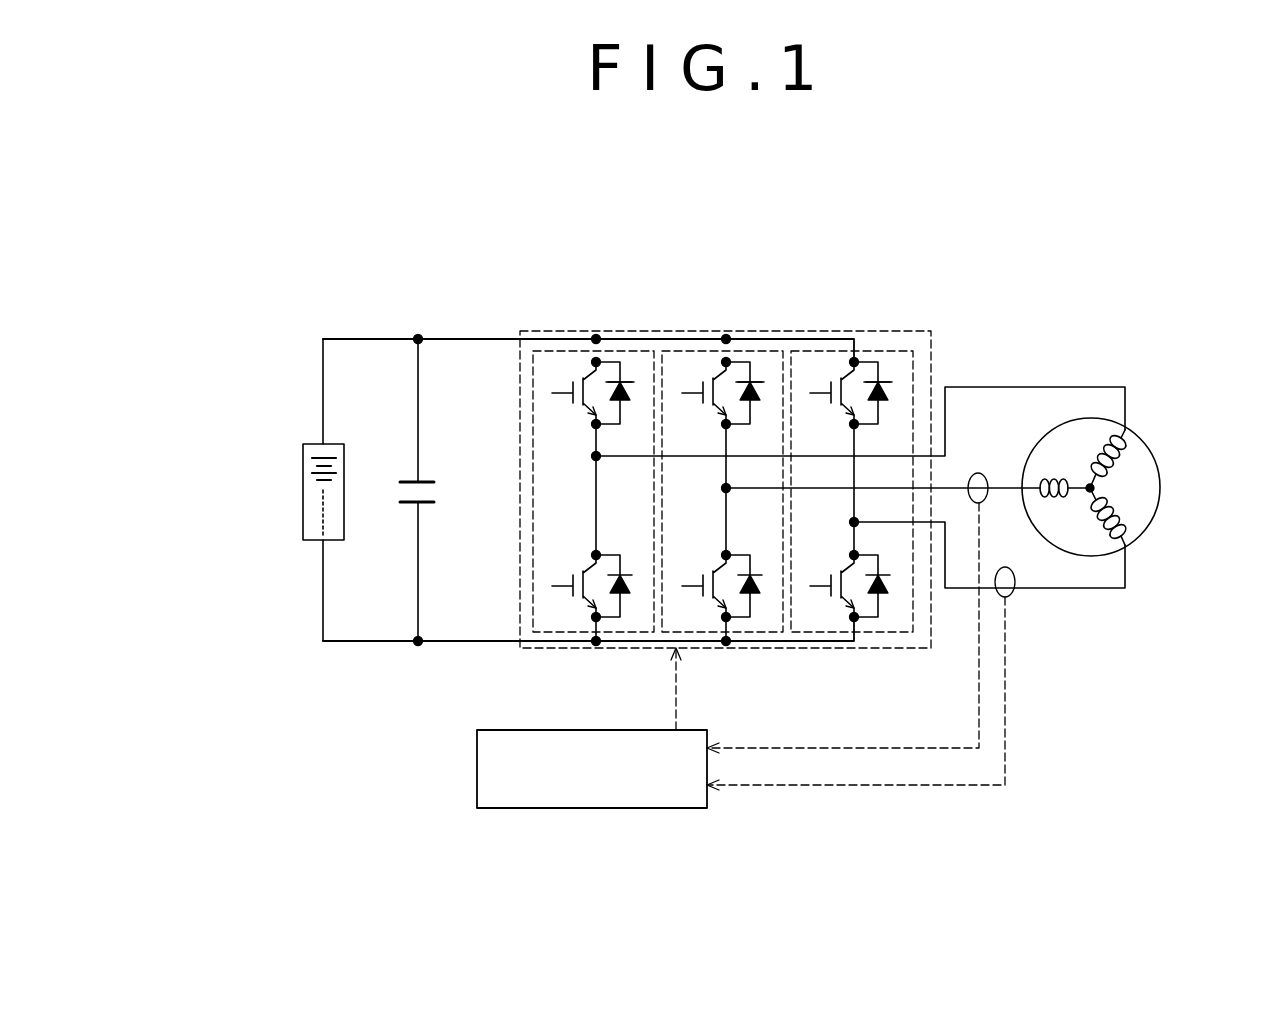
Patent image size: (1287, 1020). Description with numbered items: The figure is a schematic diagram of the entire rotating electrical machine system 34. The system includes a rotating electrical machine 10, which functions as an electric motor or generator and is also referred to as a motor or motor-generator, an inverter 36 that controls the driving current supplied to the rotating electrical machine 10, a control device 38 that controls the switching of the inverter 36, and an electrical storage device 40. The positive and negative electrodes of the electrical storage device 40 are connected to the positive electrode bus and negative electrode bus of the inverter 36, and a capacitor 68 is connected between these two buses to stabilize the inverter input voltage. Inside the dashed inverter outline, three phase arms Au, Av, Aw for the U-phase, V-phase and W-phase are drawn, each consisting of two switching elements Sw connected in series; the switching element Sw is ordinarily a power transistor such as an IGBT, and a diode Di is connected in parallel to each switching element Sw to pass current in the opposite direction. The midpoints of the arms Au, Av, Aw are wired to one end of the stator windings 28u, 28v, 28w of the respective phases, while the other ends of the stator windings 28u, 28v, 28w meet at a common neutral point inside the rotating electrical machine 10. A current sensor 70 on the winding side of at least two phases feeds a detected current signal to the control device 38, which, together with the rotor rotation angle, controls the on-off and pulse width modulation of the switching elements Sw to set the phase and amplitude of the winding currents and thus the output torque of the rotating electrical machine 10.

The rotating electrical machine 10 is at (1160, 497).
The U-phase stator winding 28u is at (1125, 442).
The V-phase stator winding 28v is at (1068, 483).
The W-phase stator winding 28w is at (1137, 541).
The rotating electrical machine system 34 is at (1058, 238).
The inverter 36 is at (598, 330).
The control device 38 is at (590, 810).
The electrical storage device 40 is at (303, 503).
The capacitor 68 is at (427, 506).
The current sensor 70 is at (978, 473).
The switching element Sw is at (584, 376).
The diode Di is at (621, 380).
The U-phase arm Au is at (596, 478).
The V-phase arm Av is at (726, 478).
The W-phase arm Aw is at (854, 444).